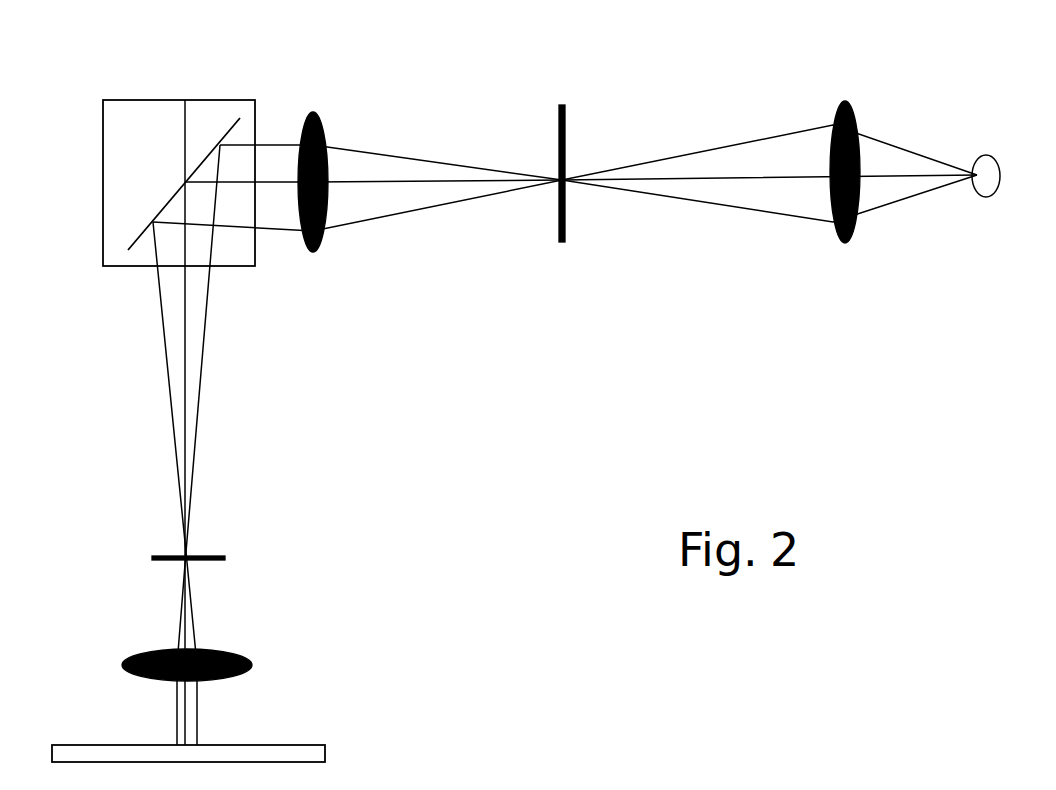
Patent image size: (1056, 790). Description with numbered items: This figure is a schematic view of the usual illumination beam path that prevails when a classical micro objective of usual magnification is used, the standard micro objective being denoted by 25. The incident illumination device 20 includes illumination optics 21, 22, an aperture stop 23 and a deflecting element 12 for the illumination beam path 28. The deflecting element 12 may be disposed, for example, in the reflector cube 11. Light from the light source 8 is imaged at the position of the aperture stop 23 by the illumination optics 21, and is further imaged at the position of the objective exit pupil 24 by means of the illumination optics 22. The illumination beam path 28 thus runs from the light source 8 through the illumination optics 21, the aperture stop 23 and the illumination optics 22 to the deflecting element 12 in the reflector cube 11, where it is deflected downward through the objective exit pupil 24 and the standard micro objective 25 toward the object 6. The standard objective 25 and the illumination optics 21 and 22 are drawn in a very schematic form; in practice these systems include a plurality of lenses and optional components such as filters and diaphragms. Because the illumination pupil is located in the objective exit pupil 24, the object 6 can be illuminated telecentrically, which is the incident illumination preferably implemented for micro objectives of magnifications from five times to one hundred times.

The object 6 is at (297, 745).
The light source 8 is at (987, 160).
The reflector cube 11 is at (242, 266).
The deflecting element 12 is at (224, 137).
The incident illumination device 20 is at (613, 288).
The illumination optics 21 is at (847, 108).
The illumination optics 22 is at (322, 112).
The aperture stop 23 is at (565, 118).
The objective exit pupil 24 is at (223, 550).
The standard micro objective 25 is at (253, 663).
The illumination beam path 28 is at (192, 366).